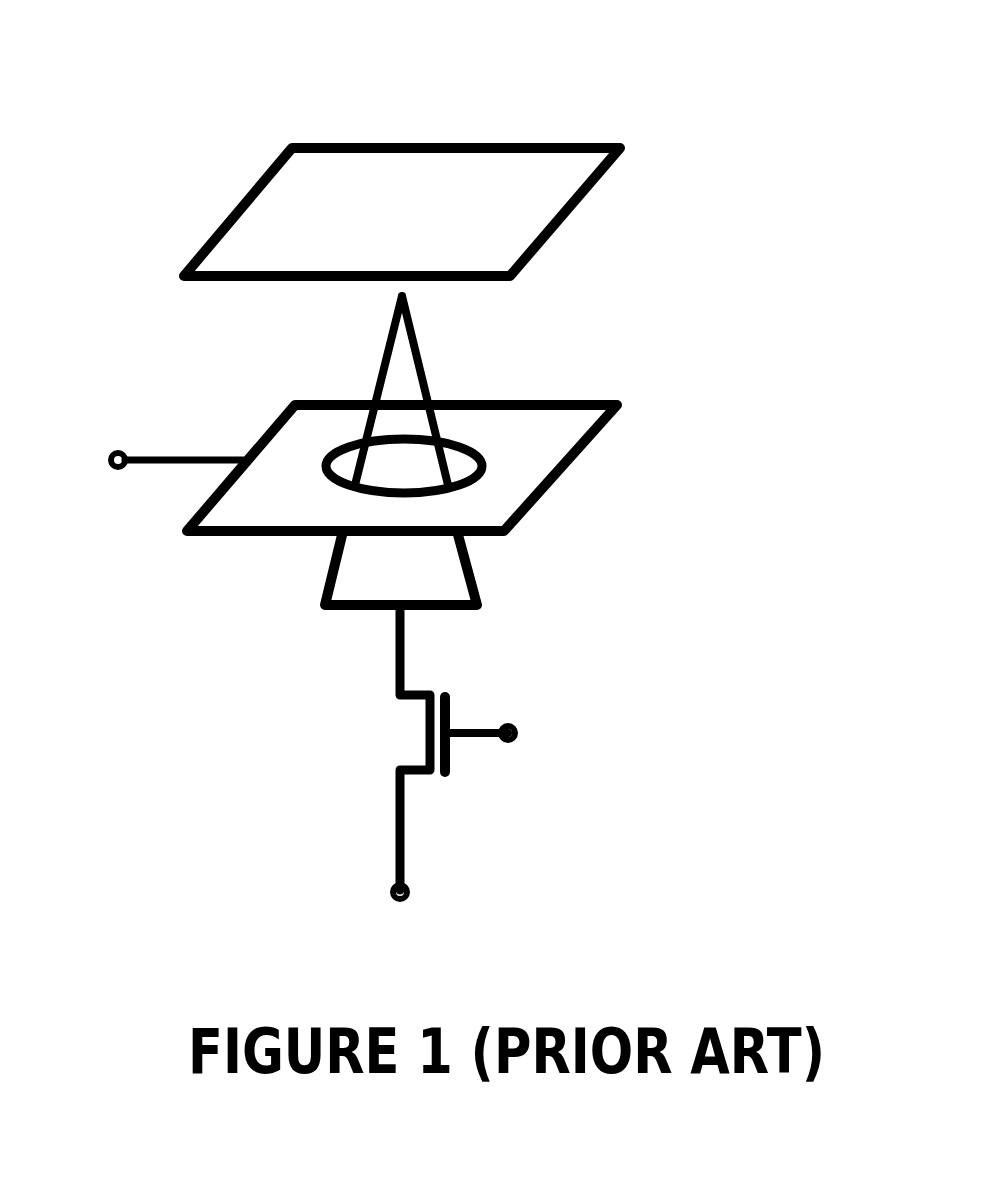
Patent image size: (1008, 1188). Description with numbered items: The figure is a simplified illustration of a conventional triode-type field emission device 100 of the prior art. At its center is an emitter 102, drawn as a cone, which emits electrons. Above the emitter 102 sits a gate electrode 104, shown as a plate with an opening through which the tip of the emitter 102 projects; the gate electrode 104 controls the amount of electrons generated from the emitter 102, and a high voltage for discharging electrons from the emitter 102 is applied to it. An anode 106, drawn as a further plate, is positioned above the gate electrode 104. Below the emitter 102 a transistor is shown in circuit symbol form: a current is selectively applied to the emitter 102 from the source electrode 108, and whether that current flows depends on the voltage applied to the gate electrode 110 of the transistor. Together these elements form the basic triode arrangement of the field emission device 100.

The triode-type field emission device 100 is at (682, 227).
The emitter 102 is at (472, 592).
The gate electrode 104 is at (579, 447).
The anode 106 is at (233, 210).
The source electrode 108 is at (418, 893).
The gate electrode of the transistor 110 is at (527, 735).